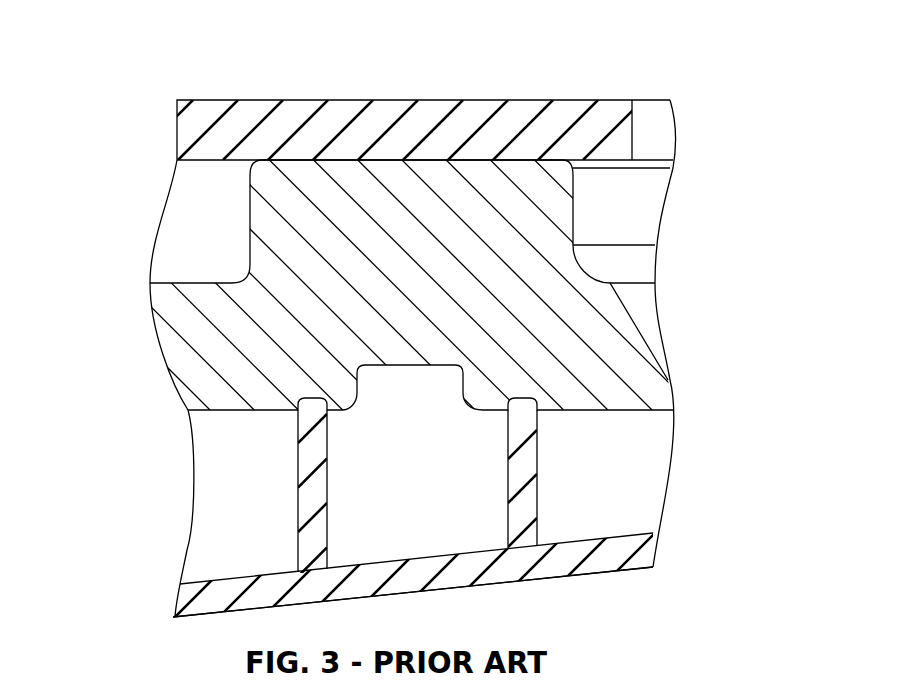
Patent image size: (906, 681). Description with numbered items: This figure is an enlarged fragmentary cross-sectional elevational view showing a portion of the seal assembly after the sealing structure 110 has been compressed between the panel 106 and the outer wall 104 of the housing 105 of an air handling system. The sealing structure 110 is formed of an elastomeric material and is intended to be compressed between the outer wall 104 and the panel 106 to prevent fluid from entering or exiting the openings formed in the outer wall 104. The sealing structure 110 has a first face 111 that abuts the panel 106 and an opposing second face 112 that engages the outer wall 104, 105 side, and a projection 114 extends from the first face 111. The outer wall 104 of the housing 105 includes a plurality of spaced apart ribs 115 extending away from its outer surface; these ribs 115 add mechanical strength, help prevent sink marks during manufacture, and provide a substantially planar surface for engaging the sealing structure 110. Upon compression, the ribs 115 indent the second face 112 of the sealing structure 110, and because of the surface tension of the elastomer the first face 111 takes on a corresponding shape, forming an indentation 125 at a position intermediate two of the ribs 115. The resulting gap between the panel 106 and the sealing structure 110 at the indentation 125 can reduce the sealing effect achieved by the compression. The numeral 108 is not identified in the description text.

The panel 106 is at (300, 100).
The indentation 125 is at (380, 162).
The first face 111 is at (283, 167).
The projection 114 is at (273, 238).
The sealing structure 110 is at (624, 267).
The second face 112 is at (603, 412).
The ribs 115 is at (523, 418).
The outer wall 104 is at (386, 583).
The housing 105 is at (205, 595).
The base layer 108 is at (413, 624).